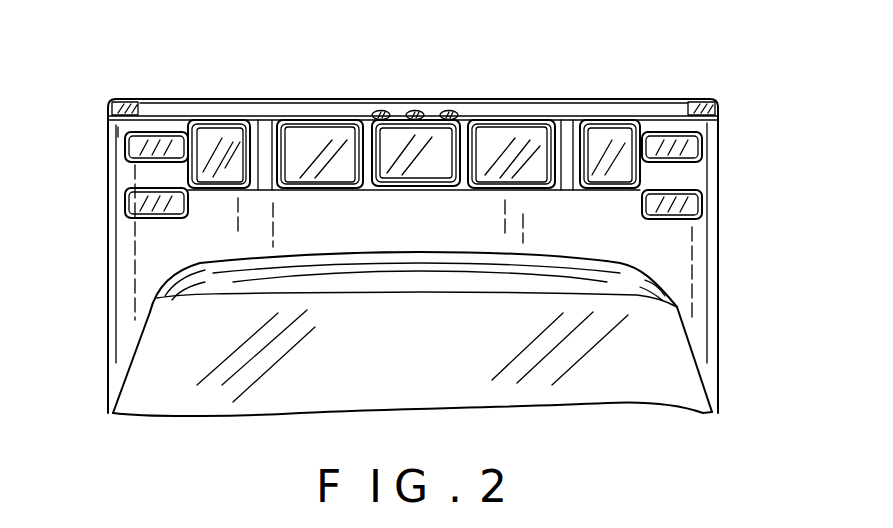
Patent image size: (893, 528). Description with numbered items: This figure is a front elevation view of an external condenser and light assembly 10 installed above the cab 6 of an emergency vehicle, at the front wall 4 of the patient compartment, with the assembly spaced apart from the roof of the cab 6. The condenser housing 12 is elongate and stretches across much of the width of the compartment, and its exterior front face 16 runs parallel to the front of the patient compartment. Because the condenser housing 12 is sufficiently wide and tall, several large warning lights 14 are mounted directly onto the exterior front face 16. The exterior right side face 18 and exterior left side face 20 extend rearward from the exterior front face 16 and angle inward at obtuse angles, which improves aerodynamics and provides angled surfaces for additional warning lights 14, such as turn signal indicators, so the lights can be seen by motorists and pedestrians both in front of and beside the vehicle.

The front wall 4 is at (667, 233).
The cab 6 is at (694, 343).
The external condenser and light assembly 10 is at (266, 122).
The condenser housing 12 is at (563, 122).
The warning lights 14 is at (400, 107).
The exterior front face 16 is at (267, 177).
The exterior right side face 18 is at (192, 133).
The exterior left side face 20 is at (639, 126).